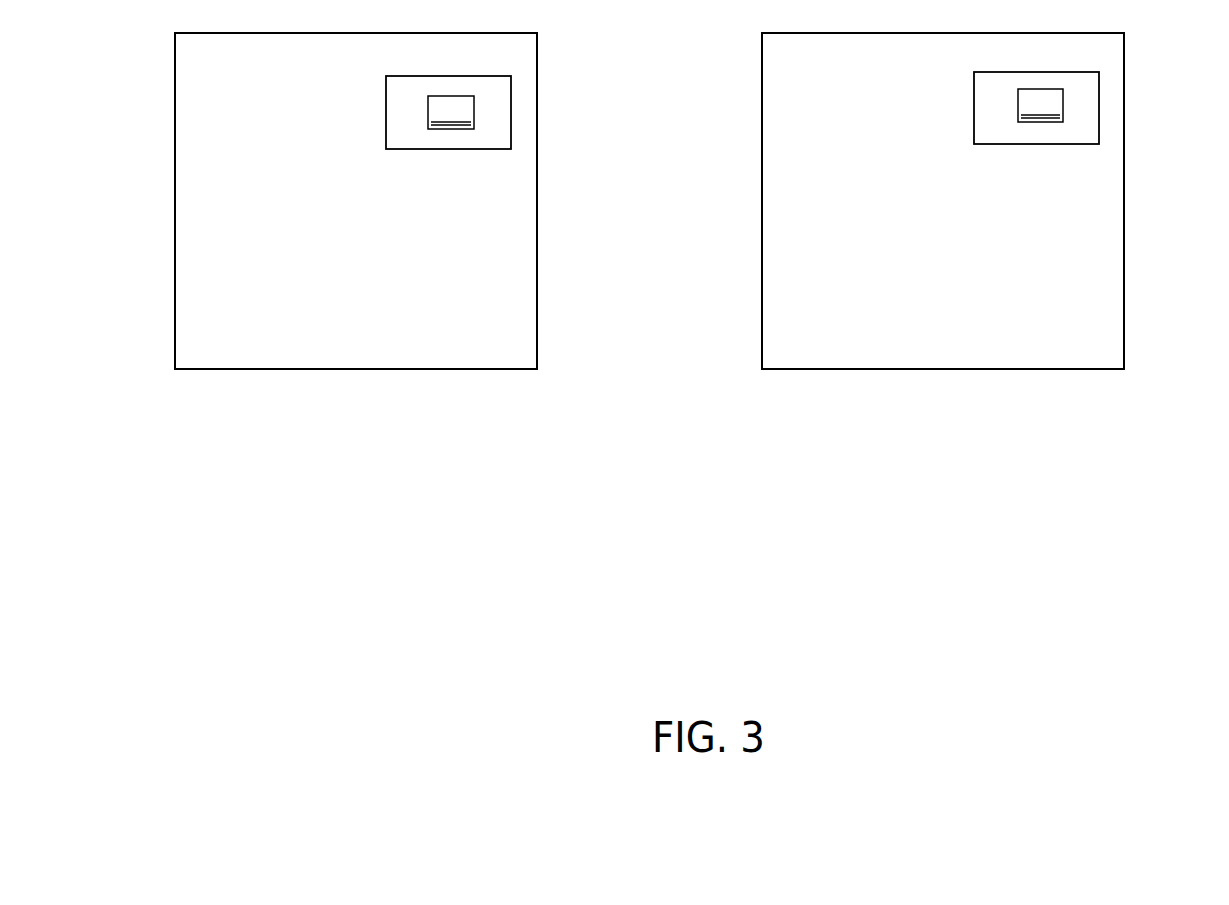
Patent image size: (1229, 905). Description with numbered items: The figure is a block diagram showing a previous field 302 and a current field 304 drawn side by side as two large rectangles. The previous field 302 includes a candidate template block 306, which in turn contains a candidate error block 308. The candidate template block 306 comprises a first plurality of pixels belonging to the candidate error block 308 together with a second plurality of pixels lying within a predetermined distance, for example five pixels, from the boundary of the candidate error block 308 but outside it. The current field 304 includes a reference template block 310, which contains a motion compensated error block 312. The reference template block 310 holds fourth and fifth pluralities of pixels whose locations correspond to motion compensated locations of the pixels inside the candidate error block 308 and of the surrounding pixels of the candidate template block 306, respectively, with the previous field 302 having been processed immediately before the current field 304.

The previous field 302 is at (537, 128).
The current field 304 is at (1125, 196).
The candidate template block 306 is at (386, 113).
The candidate error block 308 is at (451, 112).
The reference template block 310 is at (974, 108).
The motion compensated error block 312 is at (1040, 105).